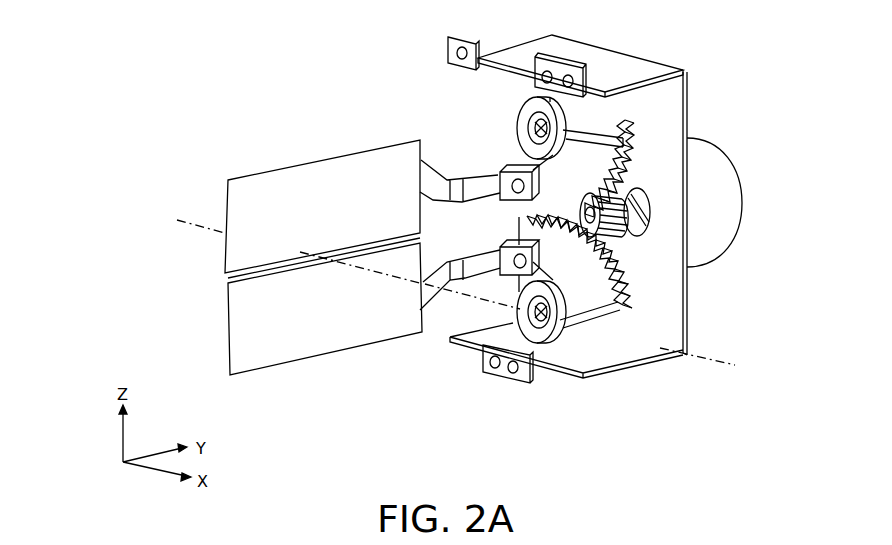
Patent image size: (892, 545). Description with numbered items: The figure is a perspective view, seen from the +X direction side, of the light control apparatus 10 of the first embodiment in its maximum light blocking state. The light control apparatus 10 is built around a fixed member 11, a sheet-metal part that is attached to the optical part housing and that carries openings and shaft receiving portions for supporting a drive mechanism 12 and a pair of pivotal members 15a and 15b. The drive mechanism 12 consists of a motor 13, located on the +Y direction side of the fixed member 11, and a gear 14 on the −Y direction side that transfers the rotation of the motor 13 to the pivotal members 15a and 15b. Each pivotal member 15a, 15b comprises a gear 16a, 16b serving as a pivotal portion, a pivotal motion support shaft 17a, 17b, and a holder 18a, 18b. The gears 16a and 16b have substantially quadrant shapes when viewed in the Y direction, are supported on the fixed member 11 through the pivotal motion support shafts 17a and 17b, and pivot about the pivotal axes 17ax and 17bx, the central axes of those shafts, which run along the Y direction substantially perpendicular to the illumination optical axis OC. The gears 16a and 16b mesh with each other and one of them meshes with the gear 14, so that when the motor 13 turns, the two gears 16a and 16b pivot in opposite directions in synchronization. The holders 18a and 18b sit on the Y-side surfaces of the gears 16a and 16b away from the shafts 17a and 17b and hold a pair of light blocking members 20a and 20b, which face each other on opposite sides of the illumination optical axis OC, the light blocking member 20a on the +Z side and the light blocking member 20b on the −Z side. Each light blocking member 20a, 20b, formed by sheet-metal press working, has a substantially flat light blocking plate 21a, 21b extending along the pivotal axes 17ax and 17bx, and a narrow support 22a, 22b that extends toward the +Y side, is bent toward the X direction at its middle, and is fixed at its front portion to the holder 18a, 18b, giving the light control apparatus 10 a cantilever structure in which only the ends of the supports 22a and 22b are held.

The light control apparatus 10 is at (156, 84).
The fixed member 11 is at (642, 60).
The drive mechanism 12 is at (736, 124).
The motor 13 is at (740, 180).
The gear 14 is at (613, 230).
The pivotal member 15a is at (451, 88).
The pivotal member 15b is at (612, 387).
The gear 16a is at (583, 143).
The gear 16b is at (577, 320).
The pivotal motion support shaft 17a is at (533, 128).
The pivotal motion support shaft 17b is at (538, 345).
The pivotal axis 17ax is at (512, 138).
The pivotal axis 17bx is at (512, 330).
The holder 18a is at (534, 181).
The holder 18b is at (535, 260).
The light blocking member 20a is at (299, 105).
The light blocking member 20b is at (360, 420).
The light blocking plate 21a is at (300, 162).
The light blocking plate 21b is at (288, 366).
The support 22a is at (423, 140).
The support 22b is at (458, 280).
The illumination optical axis OC is at (710, 350).